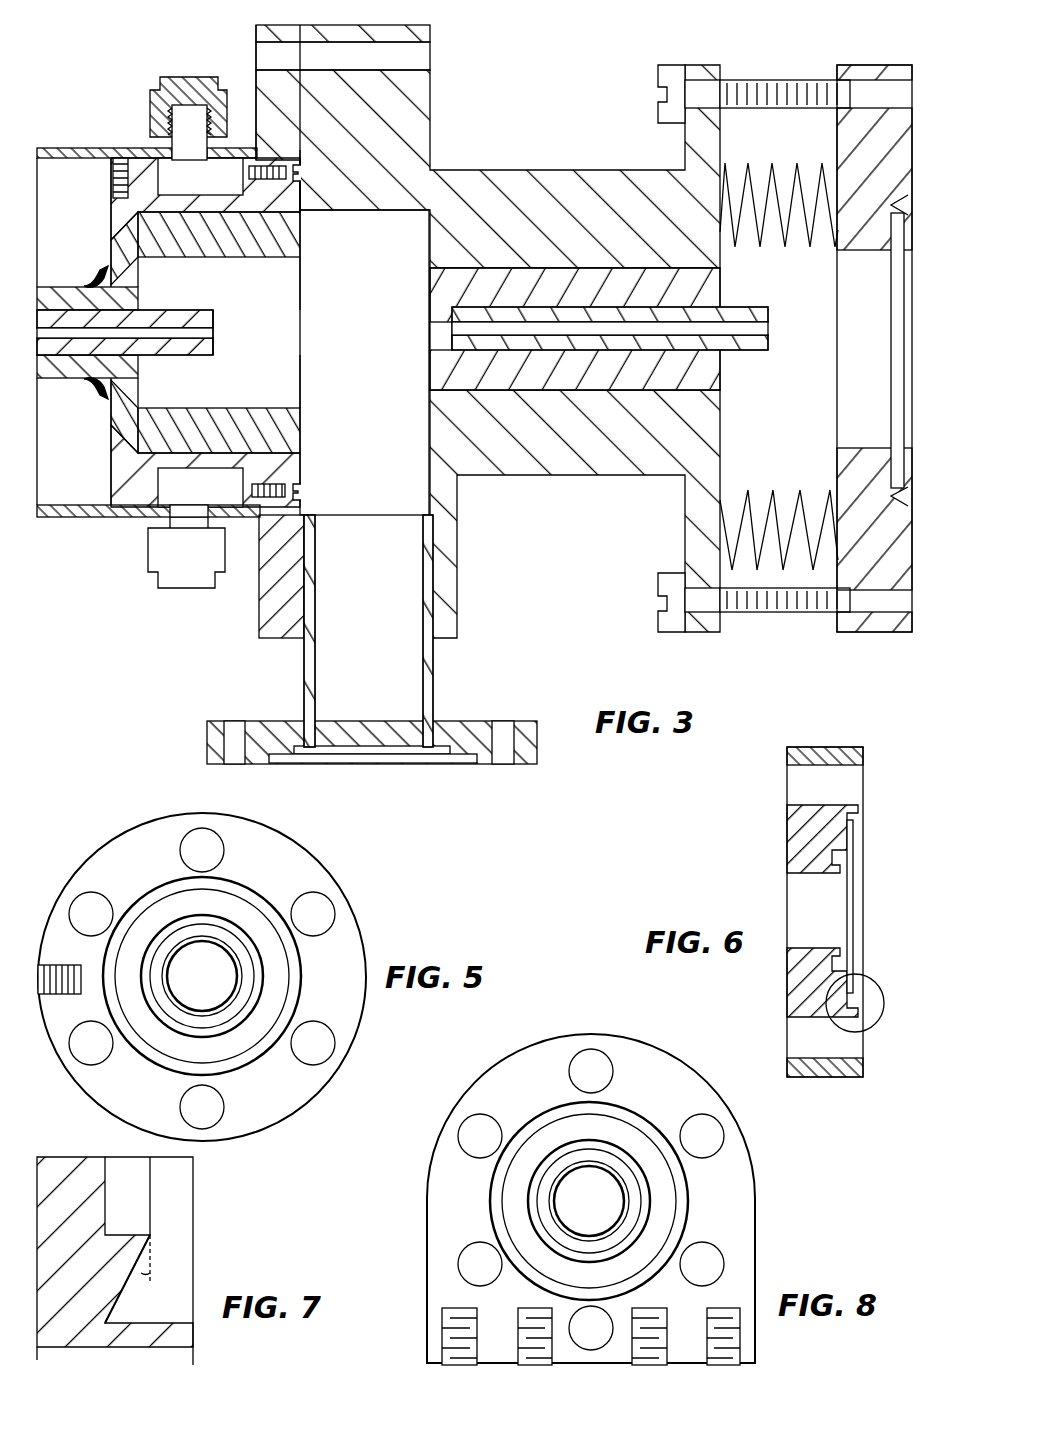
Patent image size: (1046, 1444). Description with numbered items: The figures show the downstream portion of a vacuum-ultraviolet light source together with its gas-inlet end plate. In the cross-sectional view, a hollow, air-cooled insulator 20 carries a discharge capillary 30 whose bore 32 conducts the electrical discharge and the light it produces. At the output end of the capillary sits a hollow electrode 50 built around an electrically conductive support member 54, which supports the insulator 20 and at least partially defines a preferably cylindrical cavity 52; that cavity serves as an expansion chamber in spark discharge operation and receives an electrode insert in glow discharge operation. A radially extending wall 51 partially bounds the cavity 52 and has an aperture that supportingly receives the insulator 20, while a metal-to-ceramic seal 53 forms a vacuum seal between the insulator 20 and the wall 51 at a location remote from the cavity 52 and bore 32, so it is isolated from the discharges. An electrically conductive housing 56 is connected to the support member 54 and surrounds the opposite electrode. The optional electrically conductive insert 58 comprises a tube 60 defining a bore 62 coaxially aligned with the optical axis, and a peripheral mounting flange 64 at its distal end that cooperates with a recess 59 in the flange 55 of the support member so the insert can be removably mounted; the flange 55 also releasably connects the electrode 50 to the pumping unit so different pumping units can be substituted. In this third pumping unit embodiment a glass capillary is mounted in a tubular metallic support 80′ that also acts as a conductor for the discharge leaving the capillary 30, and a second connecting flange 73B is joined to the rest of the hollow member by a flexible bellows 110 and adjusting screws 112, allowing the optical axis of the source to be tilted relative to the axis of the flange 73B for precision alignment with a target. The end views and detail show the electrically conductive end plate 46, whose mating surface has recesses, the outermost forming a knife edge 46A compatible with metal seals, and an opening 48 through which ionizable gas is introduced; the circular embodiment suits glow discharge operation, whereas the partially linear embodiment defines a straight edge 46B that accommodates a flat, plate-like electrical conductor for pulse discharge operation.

In FIG. 3, the insulator 20 is at (62, 385).
In FIG. 3, the discharge capillary 30 is at (178, 310).
In FIG. 3, the bore 32 is at (215, 340).
In FIG. 5, the end plate 46 is at (366, 946).
In FIG. 6, the end plate 46 is at (787, 838).
In FIG. 8, the end plate 46 is at (755, 1152).
In FIG. 5, the knife edge 46A is at (245, 1060).
In FIG. 6, the knife edge 46A is at (857, 995).
In FIG. 7, the knife edge 46A is at (150, 1236).
In FIG. 8, the knife edge 46A is at (686, 1212).
In FIG. 8, the straight edge 46B is at (615, 1364).
In FIG. 5, the opening 48 is at (217, 987).
In FIG. 8, the opening 48 is at (604, 1212).
In FIG. 3, the hollow electrode 50 is at (254, 22).
In FIG. 3, the radially extending wall 51 is at (140, 397).
In FIG. 3, the cavity 52 is at (283, 336).
In FIG. 3, the metal-to-ceramic seal 53 is at (87, 268).
In FIG. 3, the support member 54 is at (111, 222).
In FIG. 3, the flange 55 is at (257, 98).
In FIG. 3, the housing 56 is at (50, 148).
In FIG. 3, the electrode insert 58 is at (302, 458).
In FIG. 3, the recess 59 is at (280, 453).
In FIG. 3, the tube 60 is at (234, 258).
In FIG. 3, the bore 62 is at (291, 404).
In FIG. 3, the peripheral mounting flange 64 is at (304, 205).
In FIG. 3, the second connecting flange 73B is at (872, 65).
In FIG. 3, the tubular metallic support 80′ is at (720, 382).
In FIG. 3, the flexible bellows 110 is at (790, 250).
In FIG. 3, the adjusting screws 112 is at (748, 80).